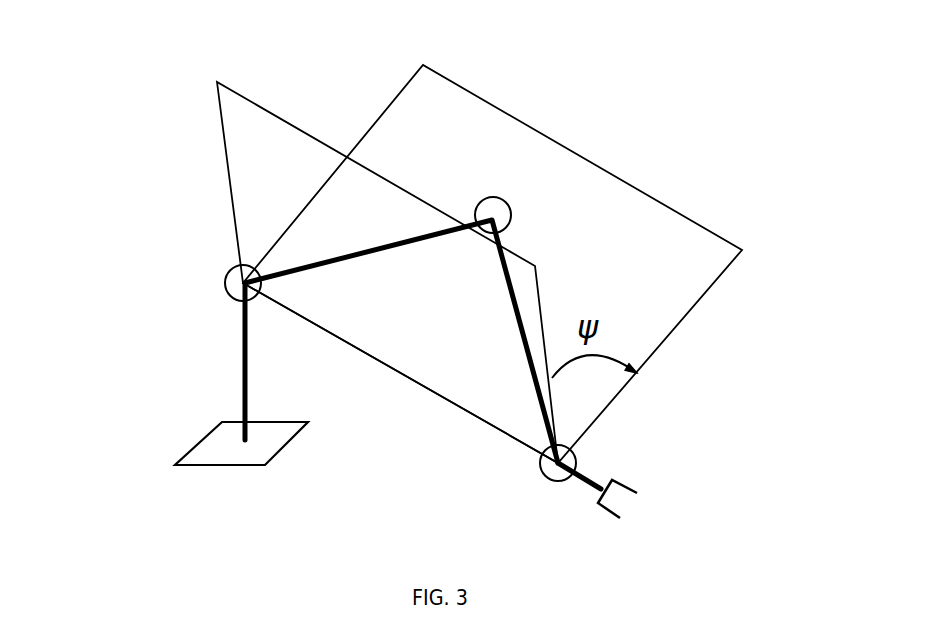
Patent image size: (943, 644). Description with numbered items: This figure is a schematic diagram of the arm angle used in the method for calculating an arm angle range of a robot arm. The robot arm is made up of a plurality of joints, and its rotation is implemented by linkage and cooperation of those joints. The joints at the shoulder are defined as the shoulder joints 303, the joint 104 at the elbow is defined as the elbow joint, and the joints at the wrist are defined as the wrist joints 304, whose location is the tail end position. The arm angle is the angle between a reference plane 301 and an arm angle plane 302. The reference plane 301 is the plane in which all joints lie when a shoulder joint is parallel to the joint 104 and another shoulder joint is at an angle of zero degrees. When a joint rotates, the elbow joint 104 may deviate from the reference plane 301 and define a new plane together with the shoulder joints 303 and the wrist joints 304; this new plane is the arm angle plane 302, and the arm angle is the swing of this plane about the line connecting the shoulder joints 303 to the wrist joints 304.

The reference plane 301 is at (257, 138).
The arm angle plane 302 is at (632, 240).
The joint 104 is at (500, 210).
The shoulder joints 303 is at (240, 288).
The wrist joints 304 is at (563, 463).